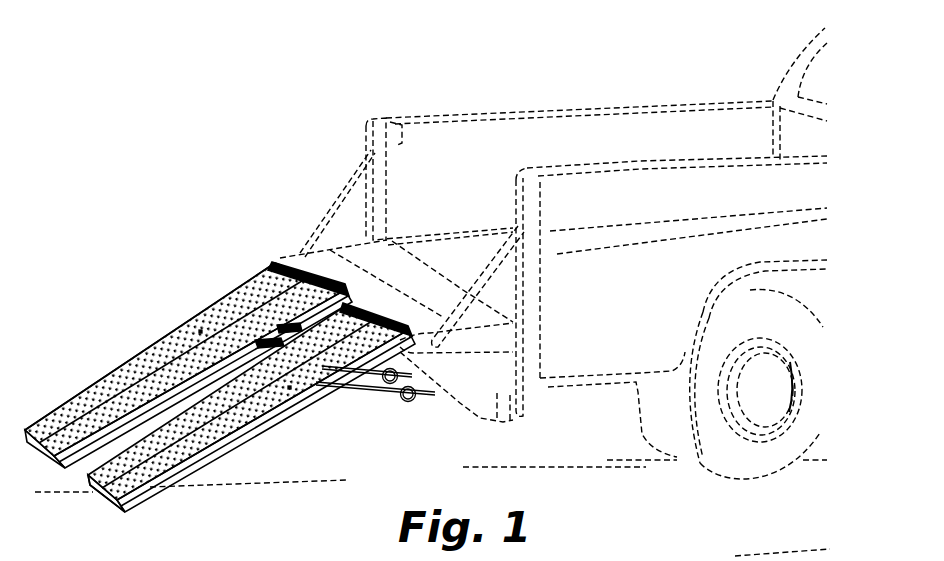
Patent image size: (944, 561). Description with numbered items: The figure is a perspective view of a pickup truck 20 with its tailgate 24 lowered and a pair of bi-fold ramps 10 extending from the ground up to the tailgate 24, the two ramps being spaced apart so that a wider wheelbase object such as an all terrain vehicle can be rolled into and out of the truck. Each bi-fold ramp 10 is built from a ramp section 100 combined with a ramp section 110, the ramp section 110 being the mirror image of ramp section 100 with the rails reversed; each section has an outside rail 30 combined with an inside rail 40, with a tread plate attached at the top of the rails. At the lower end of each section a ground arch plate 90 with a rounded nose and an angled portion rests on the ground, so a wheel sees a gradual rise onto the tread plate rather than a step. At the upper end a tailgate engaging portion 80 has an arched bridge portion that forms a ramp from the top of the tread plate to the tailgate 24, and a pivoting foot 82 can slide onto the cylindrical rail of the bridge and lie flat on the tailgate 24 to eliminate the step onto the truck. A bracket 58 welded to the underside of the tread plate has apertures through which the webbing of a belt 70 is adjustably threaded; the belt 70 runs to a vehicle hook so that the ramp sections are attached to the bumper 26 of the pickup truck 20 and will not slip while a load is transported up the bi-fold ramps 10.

The bi-fold ramp 10 is at (128, 250).
The pickup truck 20 is at (473, 271).
The tailgate 24 is at (396, 293).
The bumper 26 is at (471, 414).
The outside rail 30 is at (223, 352).
The inside rail 40 is at (200, 307).
The bracket 58 is at (185, 333).
The belt 70 is at (380, 433).
The tailgate engaging portion 80 is at (292, 262).
The pivoting foot 82 is at (311, 262).
The ground arch plate 90 is at (112, 506).
The ramp section 100 is at (88, 398).
The ramp section 110 is at (90, 393).